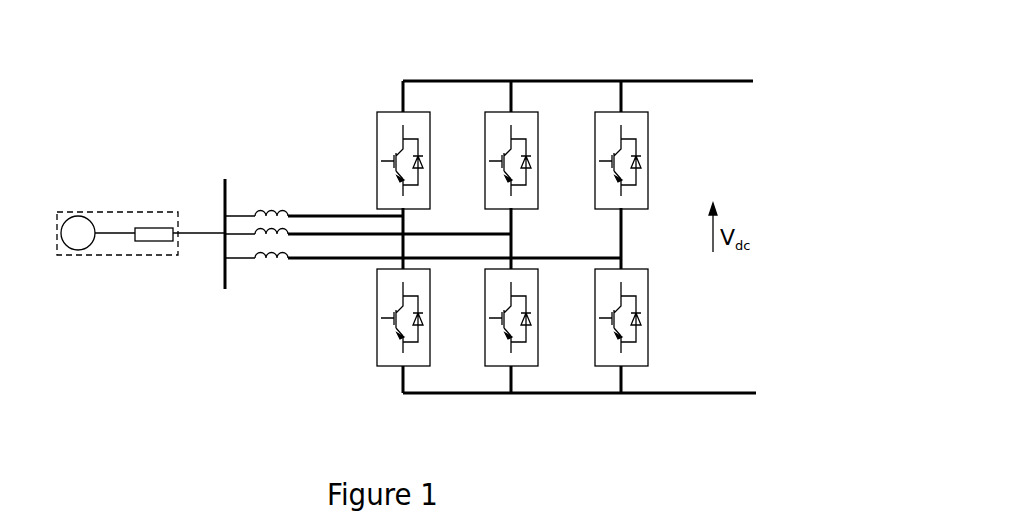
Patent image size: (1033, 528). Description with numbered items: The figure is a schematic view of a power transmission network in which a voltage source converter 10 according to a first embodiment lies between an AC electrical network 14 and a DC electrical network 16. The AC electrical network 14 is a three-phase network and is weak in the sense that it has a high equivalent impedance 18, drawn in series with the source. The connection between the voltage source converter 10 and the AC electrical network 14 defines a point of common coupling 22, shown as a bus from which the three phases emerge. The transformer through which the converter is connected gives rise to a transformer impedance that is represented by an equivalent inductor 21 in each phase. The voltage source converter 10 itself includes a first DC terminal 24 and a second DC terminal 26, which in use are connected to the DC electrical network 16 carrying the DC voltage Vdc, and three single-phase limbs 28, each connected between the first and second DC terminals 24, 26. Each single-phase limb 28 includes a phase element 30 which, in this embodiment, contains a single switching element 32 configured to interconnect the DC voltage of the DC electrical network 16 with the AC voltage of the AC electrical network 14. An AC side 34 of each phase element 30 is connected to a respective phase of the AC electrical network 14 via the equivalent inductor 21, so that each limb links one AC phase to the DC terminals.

The voltage source converter 10 is at (545, 53).
The AC electrical network 14 is at (75, 212).
The DC electrical network 16 is at (715, 81).
The equivalent impedance 18 is at (153, 233).
The inductor 21 is at (272, 210).
The point of common coupling 22 is at (222, 179).
The first DC terminal 24 is at (406, 110).
The second DC terminal 26 is at (405, 369).
The single-phase limb 28 is at (403, 398).
The phase element 30 is at (430, 184).
The switching element 32 is at (396, 150).
The AC side 34 is at (345, 262).